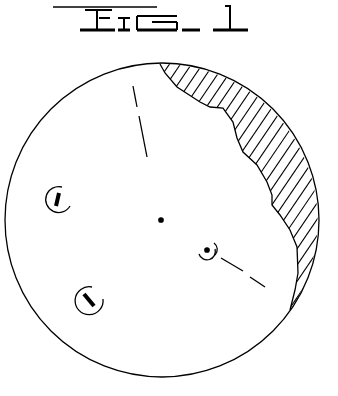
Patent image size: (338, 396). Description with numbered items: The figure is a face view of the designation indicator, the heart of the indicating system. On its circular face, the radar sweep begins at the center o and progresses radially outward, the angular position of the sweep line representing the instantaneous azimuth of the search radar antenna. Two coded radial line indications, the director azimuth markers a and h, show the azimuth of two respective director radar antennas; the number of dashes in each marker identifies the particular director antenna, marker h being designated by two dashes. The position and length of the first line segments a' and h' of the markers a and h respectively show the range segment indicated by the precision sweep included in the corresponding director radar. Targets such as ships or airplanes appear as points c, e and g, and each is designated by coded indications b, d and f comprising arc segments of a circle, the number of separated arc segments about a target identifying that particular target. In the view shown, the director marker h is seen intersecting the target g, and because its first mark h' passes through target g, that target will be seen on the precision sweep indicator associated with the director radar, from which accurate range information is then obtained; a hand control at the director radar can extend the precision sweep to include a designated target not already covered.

The director azimuth marker a is at (162, 220).
The first line segment of azimuth marker a a' is at (150, 123).
The director radar antenna marker h is at (169, 165).
The first mark of azimuth marker h h' is at (201, 234).
The center of the indicator face o is at (167, 212).
The target designation code indication b is at (64, 186).
The target c is at (60, 200).
The target designation code indication d is at (93, 287).
The target e is at (103, 299).
The target designation code indication f is at (217, 254).
The target g is at (201, 255).